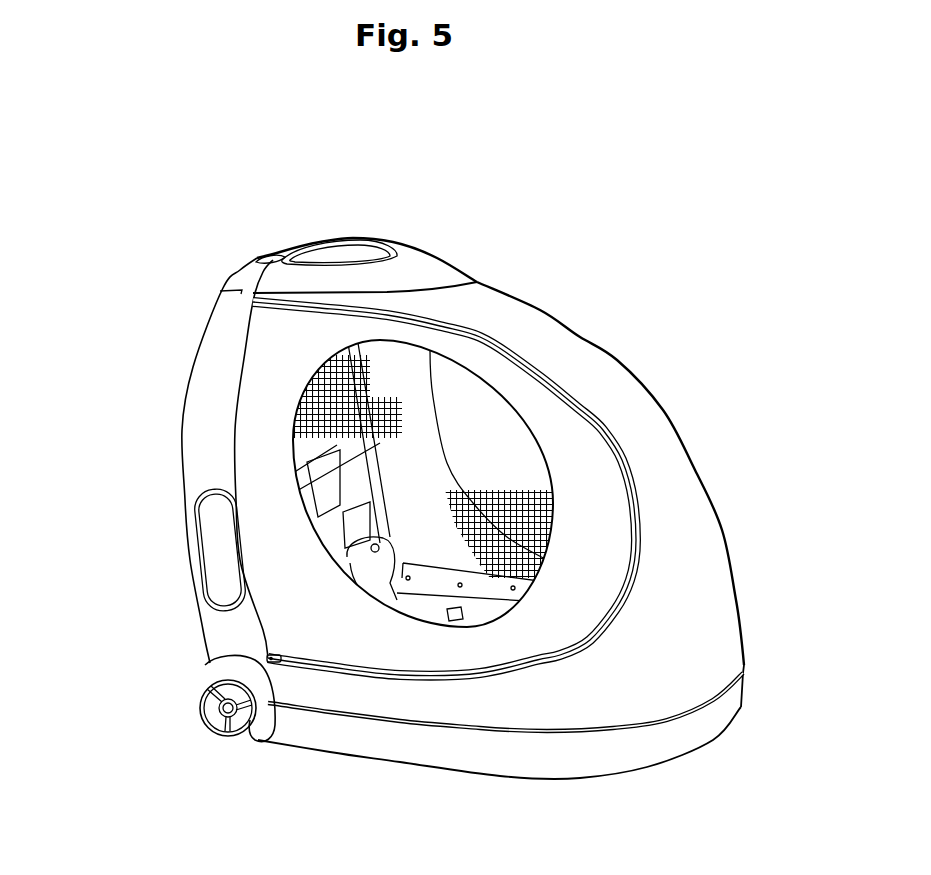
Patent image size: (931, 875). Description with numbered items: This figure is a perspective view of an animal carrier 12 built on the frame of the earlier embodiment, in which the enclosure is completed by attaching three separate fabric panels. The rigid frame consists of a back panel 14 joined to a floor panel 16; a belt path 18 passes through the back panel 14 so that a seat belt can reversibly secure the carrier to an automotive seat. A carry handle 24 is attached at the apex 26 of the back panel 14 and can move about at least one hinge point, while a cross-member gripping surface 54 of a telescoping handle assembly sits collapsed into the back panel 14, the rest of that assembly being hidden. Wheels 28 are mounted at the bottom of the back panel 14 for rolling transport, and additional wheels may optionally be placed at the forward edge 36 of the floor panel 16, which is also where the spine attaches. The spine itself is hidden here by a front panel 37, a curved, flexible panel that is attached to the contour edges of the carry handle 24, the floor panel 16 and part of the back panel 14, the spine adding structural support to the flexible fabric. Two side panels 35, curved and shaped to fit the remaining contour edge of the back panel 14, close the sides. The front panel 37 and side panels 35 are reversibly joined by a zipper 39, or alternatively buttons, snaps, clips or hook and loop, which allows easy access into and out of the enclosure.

The animal carrier 12 is at (140, 236).
The back panel 14 is at (203, 362).
The floor panel 16 is at (452, 757).
The belt path 18 is at (213, 557).
The carry handle 24 is at (438, 265).
The apex 26 is at (278, 257).
The wheels 28 is at (200, 707).
The side panels 35 is at (418, 440).
The forward edge of the floor panel 36 is at (737, 700).
The front panel 37 is at (603, 368).
The zipper 39 is at (510, 350).
The cross-member gripping surface 54 is at (232, 283).